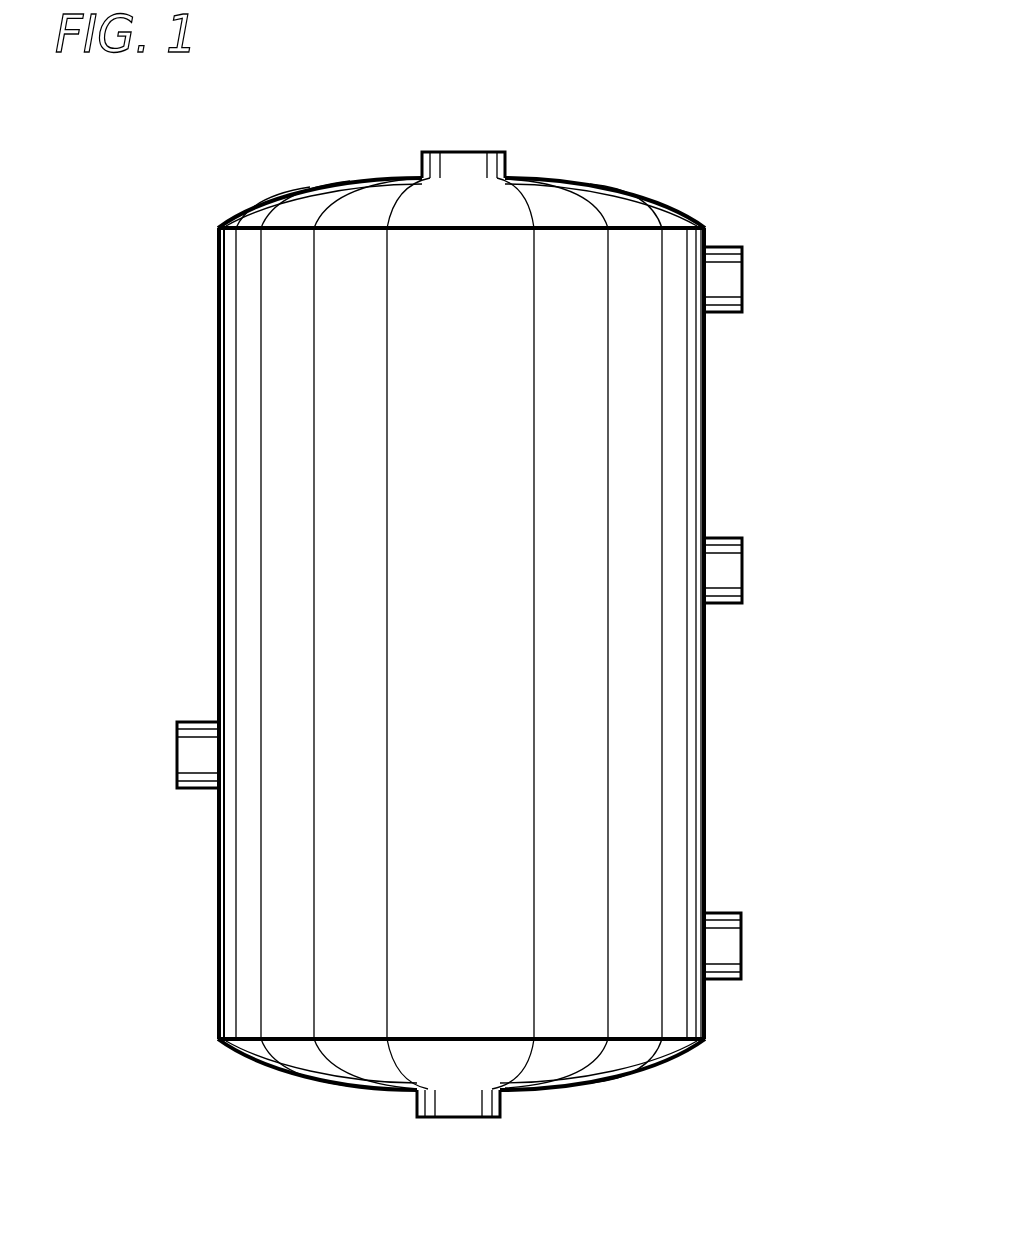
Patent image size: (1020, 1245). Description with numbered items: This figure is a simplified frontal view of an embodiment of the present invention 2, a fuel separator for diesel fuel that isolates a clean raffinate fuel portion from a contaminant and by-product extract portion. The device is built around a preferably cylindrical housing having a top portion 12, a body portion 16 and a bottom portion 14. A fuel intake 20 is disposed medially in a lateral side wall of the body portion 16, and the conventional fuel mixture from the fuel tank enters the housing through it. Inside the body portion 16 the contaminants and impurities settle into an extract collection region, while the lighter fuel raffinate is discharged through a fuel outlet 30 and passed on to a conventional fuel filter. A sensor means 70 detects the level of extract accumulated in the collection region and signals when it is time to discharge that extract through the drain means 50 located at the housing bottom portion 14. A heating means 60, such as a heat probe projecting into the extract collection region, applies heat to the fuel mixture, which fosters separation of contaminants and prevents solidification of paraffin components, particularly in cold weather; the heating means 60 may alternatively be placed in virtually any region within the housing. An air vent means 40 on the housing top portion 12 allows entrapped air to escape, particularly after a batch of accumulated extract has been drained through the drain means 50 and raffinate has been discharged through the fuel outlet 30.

The embodiment of the present invention 2 is at (245, 180).
The top portion 12 is at (595, 190).
The bottom portion 14 is at (310, 1075).
The body portion 16 is at (230, 552).
The fuel intake 20 is at (177, 748).
The fuel outlet 30 is at (743, 273).
The air vent means 40 is at (495, 152).
The drain means 50 is at (478, 1118).
The heating means 60 is at (741, 945).
The sensor means 70 is at (742, 568).